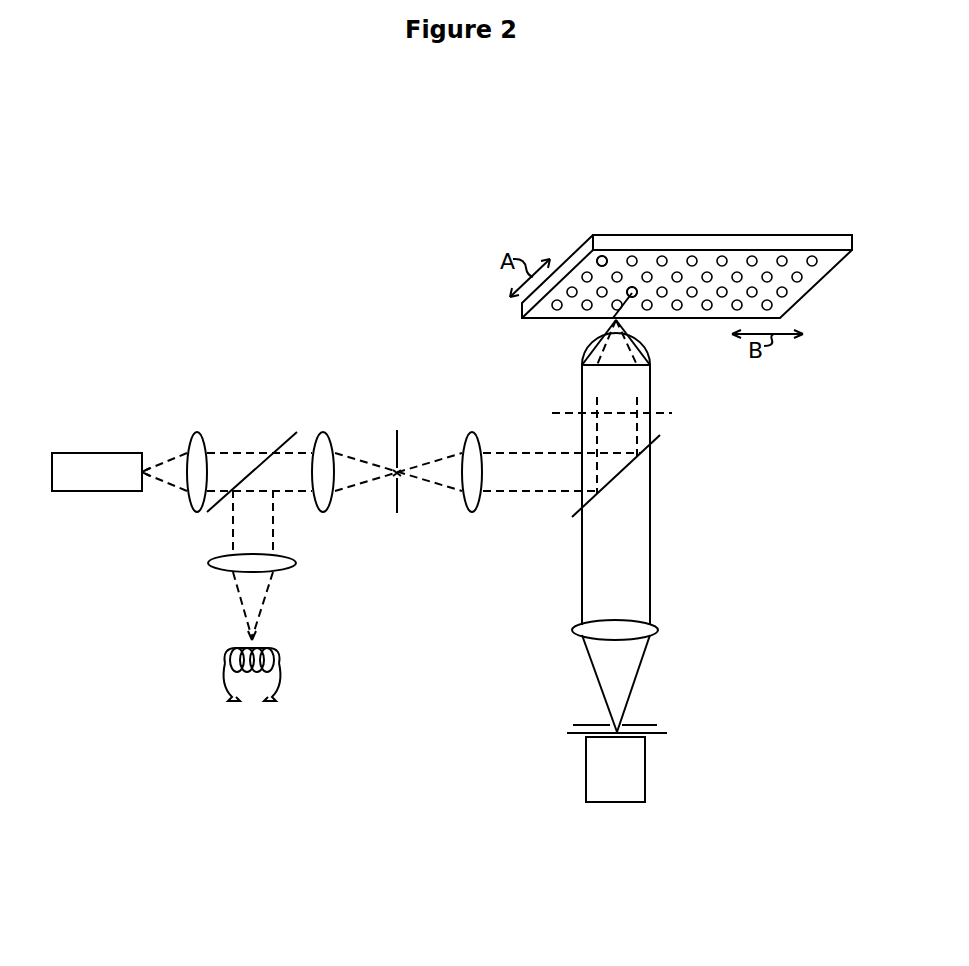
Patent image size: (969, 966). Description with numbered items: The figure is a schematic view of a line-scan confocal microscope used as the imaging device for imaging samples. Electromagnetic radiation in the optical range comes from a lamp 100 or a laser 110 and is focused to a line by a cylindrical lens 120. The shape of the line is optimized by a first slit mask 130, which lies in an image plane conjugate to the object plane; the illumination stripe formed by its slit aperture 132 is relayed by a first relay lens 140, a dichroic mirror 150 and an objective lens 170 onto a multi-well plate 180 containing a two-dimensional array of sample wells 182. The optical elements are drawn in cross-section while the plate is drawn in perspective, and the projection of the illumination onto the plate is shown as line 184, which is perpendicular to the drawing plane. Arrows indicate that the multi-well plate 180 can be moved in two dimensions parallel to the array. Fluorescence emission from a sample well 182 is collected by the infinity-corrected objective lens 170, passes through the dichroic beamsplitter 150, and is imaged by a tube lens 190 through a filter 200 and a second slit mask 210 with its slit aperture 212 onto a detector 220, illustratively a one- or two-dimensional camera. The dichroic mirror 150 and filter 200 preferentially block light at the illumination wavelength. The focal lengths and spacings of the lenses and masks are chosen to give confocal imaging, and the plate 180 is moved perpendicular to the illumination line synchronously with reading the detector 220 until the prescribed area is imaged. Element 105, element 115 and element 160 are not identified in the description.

The lamp 100 is at (300, 659).
The objective lens 105 is at (285, 571).
The laser 110 is at (112, 453).
The lens 115 is at (190, 441).
The cylindrical lens 120 is at (342, 426).
The first slit mask 130 is at (420, 427).
The slit aperture 132 is at (404, 479).
The first relay lens 140 is at (482, 442).
The dichroic mirror 150 is at (575, 513).
The reference plane 160 is at (566, 412).
The objective lens 170 is at (632, 376).
The multi-well plate 180 is at (813, 232).
The sample wells 182 is at (603, 256).
The line of illumination 184 is at (615, 321).
The tube lens 190 is at (658, 629).
The filter 200 is at (638, 724).
The second slit mask 210 is at (574, 733).
The slit aperture 212 is at (617, 736).
The detector 220 is at (670, 786).